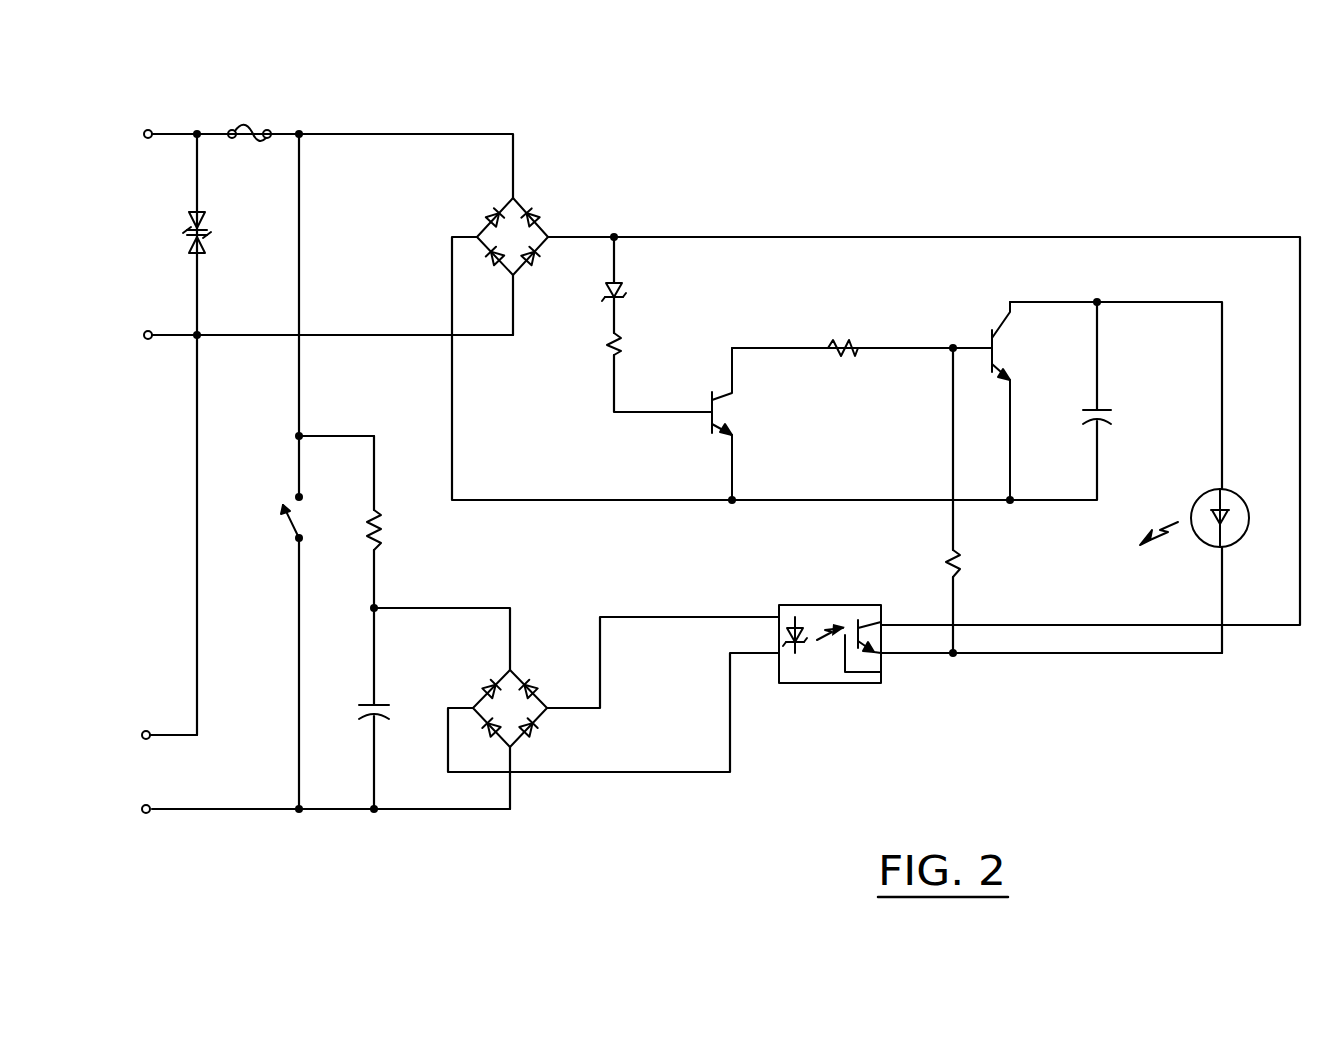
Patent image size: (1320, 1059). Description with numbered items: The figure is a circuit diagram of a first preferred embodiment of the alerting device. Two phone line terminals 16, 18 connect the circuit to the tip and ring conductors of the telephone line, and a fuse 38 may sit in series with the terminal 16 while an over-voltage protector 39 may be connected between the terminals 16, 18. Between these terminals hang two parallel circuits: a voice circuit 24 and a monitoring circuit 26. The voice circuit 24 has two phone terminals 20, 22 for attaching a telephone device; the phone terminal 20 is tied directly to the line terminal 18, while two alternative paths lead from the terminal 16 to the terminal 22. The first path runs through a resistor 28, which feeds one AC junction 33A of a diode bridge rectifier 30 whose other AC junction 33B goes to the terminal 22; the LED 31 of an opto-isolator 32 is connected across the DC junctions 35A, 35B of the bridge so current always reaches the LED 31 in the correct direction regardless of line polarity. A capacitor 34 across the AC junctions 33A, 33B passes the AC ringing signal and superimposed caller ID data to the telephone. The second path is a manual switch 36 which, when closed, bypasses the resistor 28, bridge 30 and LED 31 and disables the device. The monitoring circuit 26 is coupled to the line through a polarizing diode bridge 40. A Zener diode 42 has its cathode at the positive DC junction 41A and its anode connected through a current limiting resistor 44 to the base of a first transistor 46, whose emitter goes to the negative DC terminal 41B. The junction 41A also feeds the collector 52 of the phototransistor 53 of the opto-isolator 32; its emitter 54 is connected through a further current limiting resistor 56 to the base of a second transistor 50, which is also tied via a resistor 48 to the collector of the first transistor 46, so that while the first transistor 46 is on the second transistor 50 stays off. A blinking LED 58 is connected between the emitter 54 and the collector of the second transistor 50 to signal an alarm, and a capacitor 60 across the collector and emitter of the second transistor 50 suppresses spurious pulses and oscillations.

The terminal 16 is at (143, 129).
The terminal 18 is at (143, 339).
The phone terminal 20 is at (141, 737).
The phone terminal 22 is at (142, 813).
The voice circuit 24 is at (562, 828).
The monitoring circuit 26 is at (1022, 195).
The resistor 28 is at (380, 536).
The diode bridge rectifier 30 is at (513, 689).
The LED 31 is at (806, 618).
The opto-isolator 32 is at (870, 654).
The AC junction 33A is at (500, 690).
The AC junction 33B is at (520, 745).
The capacitor 34 is at (372, 708).
The DC junction 35A is at (548, 705).
The DC junction 35B is at (478, 710).
The manual switch 36 is at (300, 518).
The fuse 38 is at (243, 128).
The over-voltage protector 39 is at (206, 232).
The diode bridge 40 is at (510, 209).
The positive DC junction 41A is at (542, 235).
The negative DC terminal 41B is at (492, 222).
The Zener diode 42 is at (622, 296).
The current limiting resistor 44 is at (622, 346).
The first transistor 46 is at (727, 405).
The resistor 48 is at (846, 341).
The second transistor 50 is at (1000, 335).
The collector 52 is at (880, 618).
The phototransistor 53 is at (858, 630).
The emitter 54 is at (885, 660).
The current limiting resistor 56 is at (960, 563).
The LED 58 is at (1240, 497).
The capacitor 60 is at (1104, 412).